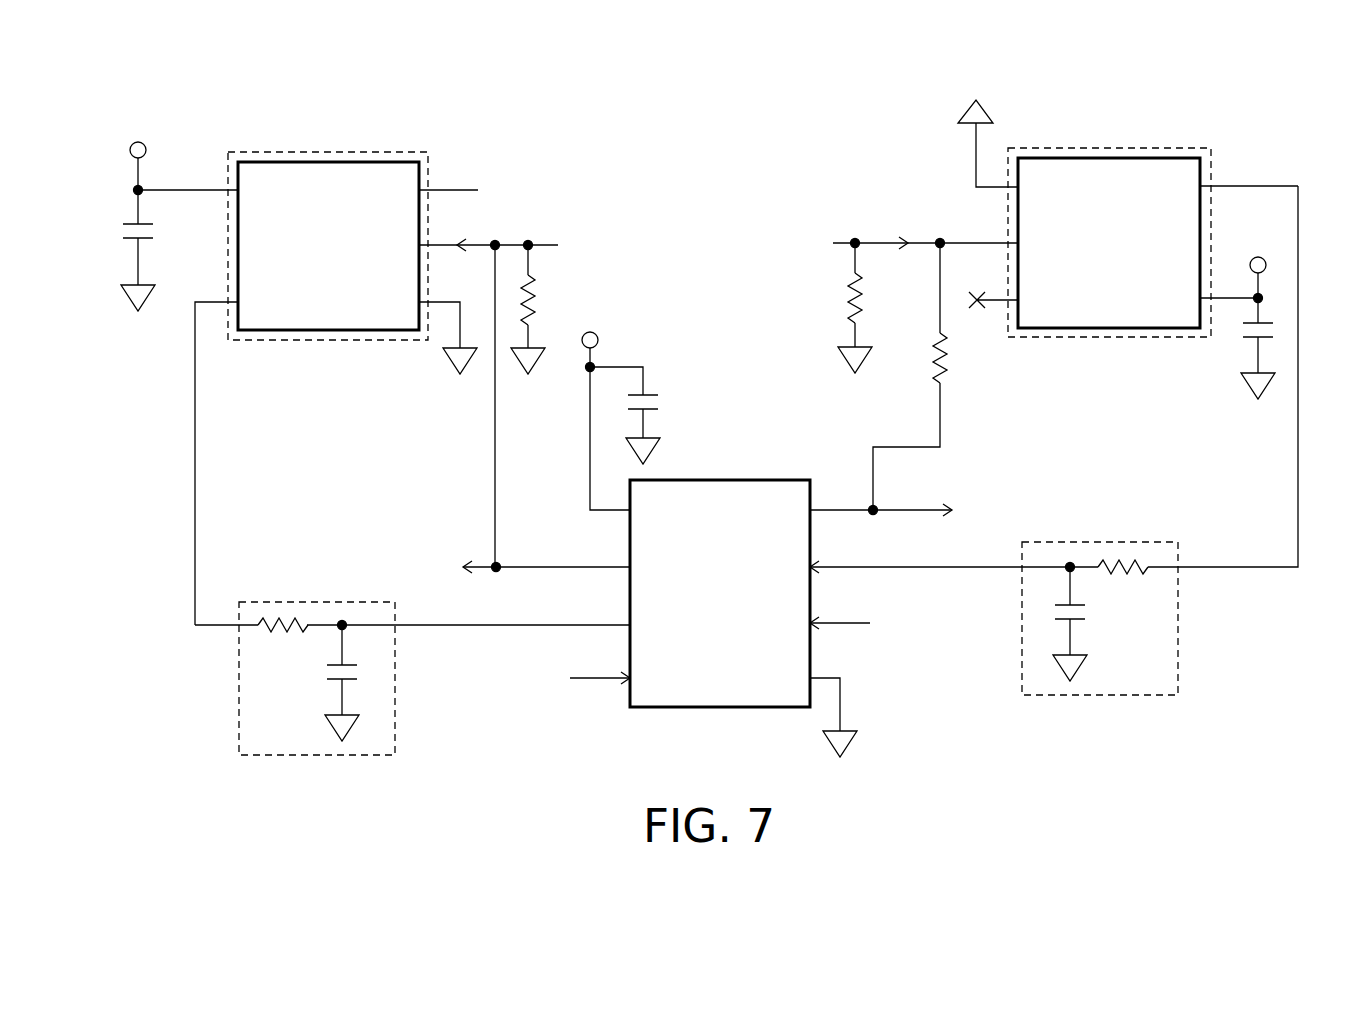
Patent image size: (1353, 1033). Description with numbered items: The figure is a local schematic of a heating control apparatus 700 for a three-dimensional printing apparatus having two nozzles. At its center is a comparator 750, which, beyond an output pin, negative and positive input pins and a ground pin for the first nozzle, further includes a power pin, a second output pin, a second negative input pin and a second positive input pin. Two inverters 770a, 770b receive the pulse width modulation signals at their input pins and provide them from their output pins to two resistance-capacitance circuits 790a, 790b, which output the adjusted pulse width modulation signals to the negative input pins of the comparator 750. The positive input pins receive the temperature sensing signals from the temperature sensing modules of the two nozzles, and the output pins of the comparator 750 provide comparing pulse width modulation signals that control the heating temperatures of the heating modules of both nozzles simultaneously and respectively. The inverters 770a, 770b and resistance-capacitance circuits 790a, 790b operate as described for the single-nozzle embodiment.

The heating control apparatus 700 is at (1322, 764).
The comparator 750 is at (732, 452).
The inverter 770a is at (1160, 148).
The inverter 770b is at (376, 152).
The resistance-capacitance circuit 790a is at (1112, 542).
The resistance-capacitance circuit 790b is at (267, 602).